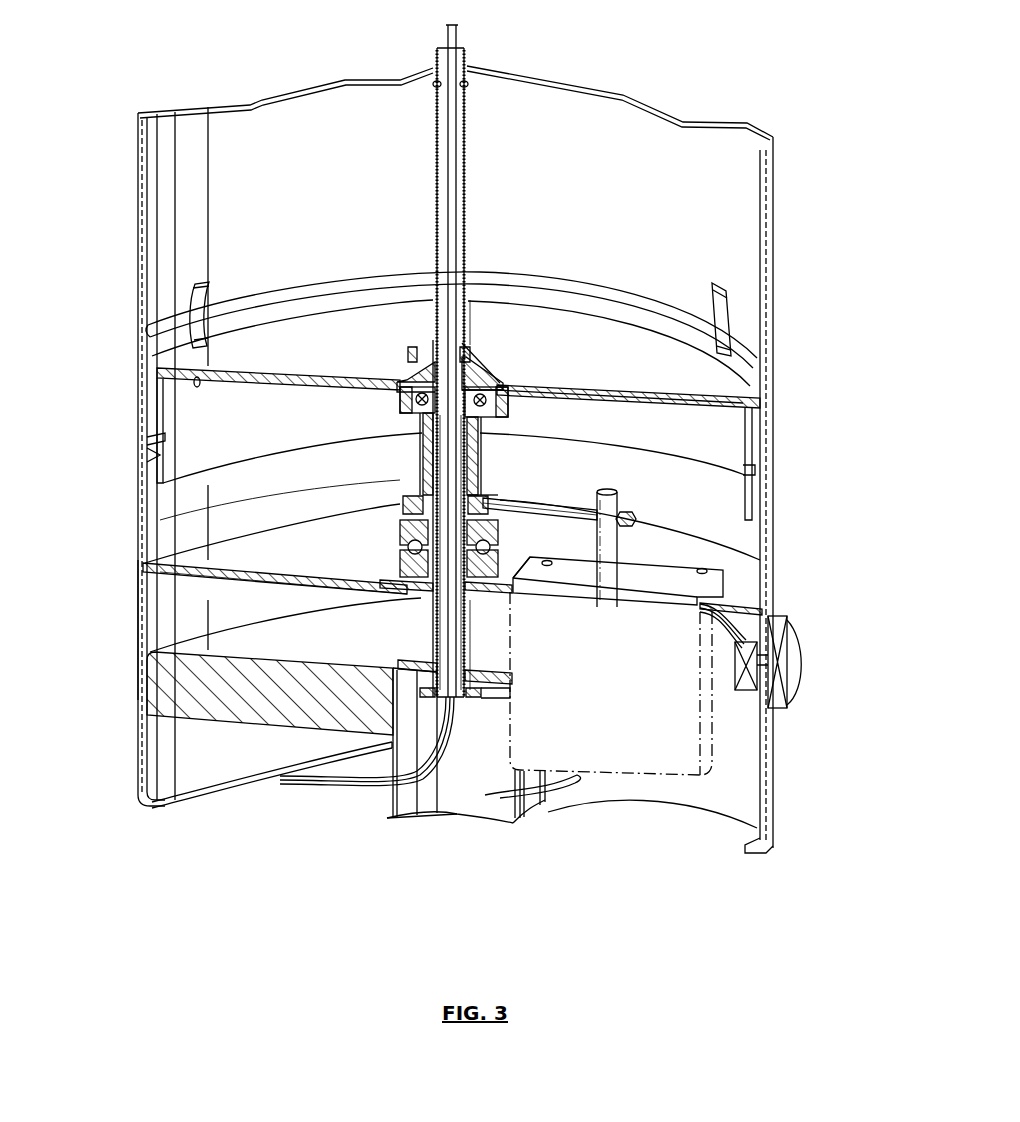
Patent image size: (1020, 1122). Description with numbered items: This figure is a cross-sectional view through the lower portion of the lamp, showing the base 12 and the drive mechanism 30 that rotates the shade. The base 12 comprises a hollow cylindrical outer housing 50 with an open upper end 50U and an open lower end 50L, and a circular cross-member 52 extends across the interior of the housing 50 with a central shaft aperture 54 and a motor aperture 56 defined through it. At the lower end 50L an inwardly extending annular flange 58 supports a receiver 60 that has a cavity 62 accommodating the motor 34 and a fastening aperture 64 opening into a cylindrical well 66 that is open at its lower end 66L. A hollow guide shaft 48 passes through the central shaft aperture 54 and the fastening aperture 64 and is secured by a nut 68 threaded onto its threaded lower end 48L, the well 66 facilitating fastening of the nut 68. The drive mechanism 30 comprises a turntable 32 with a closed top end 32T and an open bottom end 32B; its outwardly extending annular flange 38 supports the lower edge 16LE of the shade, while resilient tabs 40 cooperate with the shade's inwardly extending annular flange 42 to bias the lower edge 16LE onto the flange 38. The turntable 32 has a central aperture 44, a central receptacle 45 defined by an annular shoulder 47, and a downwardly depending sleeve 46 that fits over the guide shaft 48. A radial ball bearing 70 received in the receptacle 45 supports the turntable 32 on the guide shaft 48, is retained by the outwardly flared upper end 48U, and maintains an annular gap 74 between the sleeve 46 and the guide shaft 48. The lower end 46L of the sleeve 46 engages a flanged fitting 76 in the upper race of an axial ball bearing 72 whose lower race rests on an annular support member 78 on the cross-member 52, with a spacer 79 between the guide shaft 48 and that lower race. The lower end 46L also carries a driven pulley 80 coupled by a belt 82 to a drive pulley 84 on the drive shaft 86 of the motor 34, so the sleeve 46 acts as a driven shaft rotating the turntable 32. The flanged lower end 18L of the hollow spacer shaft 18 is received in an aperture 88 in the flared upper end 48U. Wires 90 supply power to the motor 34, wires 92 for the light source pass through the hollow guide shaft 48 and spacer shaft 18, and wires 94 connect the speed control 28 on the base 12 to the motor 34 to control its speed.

The base 12 is at (134, 713).
The lower edge of the shade 16LE is at (147, 438).
The spacer shaft 18 is at (466, 128).
The flanged lower end of the spacer shaft 18L is at (428, 337).
The speed control 28 is at (793, 690).
The drive mechanism 30 is at (672, 445).
The turntable 32 is at (322, 320).
The open bottom end of the turntable 32B is at (710, 508).
The closed top end of the turntable 32T is at (520, 337).
The motor 34 is at (611, 683).
The outwardly extending annular flange 38 is at (152, 456).
The resilient tabs 40 is at (201, 282).
The inwardly extending annular flange 42 is at (568, 284).
The central aperture 44 is at (423, 448).
The central receptacle 45 is at (399, 374).
The sleeve 46 is at (483, 465).
The lower end of the sleeve 46L is at (492, 533).
The annular shoulder 47 is at (408, 418).
The guide shaft 48 is at (440, 472).
The threaded lower end of the guide shaft 48L is at (474, 626).
The outwardly flared upper end of the guide shaft 48U is at (480, 337).
The outer housing 50 is at (138, 620).
The open lower end of the housing 50L is at (756, 858).
The open upper end of the housing 50U is at (784, 438).
The cross-member 52 is at (305, 527).
The central shaft aperture 54 is at (423, 601).
The motor aperture 56 is at (708, 612).
The inwardly extending annular flange 58 is at (250, 770).
The receiver 60 is at (217, 705).
The cavity 62 is at (642, 792).
The fastening aperture 64 is at (425, 660).
The cylindrical well 66 is at (436, 743).
The lower end of the cylindrical well 66L is at (456, 822).
The nut 68 is at (470, 690).
The radial ball bearing 70 is at (503, 405).
The axial ball bearing 72 is at (394, 552).
The annular gap 74 is at (480, 440).
The flanged fitting 76 is at (408, 521).
The annular support member 78 is at (512, 600).
The spacer 79 is at (425, 598).
The driven pulley 80 is at (411, 492).
The belt 82 is at (562, 504).
The drive pulley 84 is at (626, 516).
The drive shaft 86 is at (609, 549).
The aperture 88 is at (412, 352).
The wires 90 is at (550, 796).
The wires 92 is at (347, 784).
The wires 94 is at (720, 655).